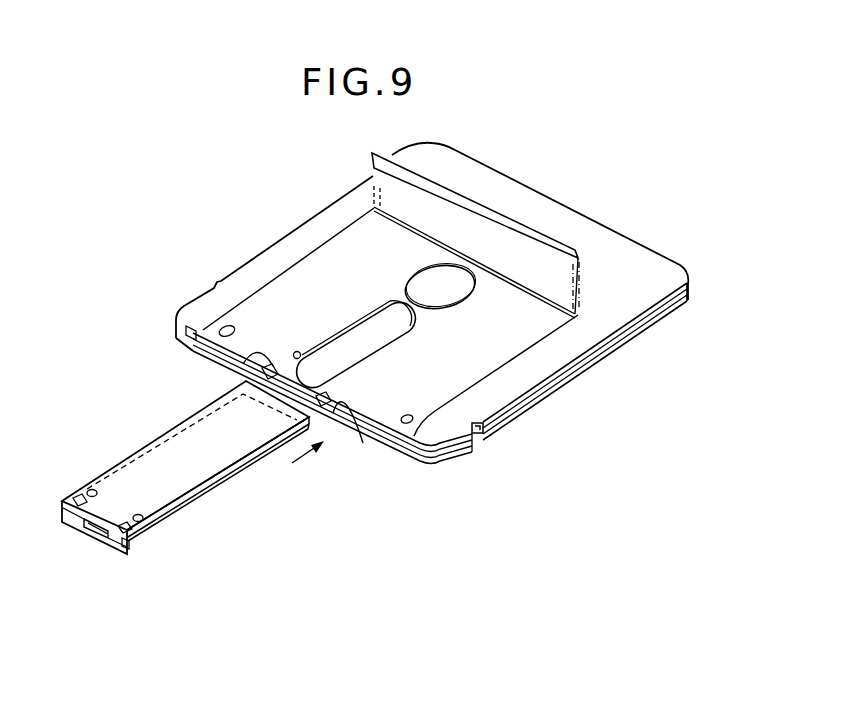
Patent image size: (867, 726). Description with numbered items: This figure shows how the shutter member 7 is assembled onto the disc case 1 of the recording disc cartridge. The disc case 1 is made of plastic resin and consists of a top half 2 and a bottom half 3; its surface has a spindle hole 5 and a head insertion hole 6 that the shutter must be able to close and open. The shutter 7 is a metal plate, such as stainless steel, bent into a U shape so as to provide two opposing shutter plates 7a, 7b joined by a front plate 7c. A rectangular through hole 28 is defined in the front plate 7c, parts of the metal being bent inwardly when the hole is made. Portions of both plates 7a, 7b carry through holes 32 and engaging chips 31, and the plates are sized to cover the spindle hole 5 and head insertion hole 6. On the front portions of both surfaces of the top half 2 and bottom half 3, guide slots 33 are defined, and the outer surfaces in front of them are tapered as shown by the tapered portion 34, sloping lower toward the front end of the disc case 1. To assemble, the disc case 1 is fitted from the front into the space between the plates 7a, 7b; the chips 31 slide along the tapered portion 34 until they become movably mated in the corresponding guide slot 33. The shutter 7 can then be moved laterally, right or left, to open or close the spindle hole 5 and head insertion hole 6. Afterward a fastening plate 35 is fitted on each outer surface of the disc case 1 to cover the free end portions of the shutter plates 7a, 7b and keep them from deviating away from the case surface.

The disc case 1 is at (280, 240).
The top half 2 is at (448, 436).
The bottom half 3 is at (432, 458).
The spindle hole 5 is at (427, 276).
The head insertion hole 6 is at (362, 338).
The shutter member 7 is at (185, 504).
The shutter plate 7a is at (206, 466).
The shutter plate 7b is at (253, 477).
The front plate 7c is at (113, 564).
The through hole 28 is at (93, 540).
The engaging chip 31 is at (141, 545).
The through hole 32 is at (89, 488).
The guide slot 33 is at (334, 412).
The tapered portion 34 is at (222, 364).
The fastening plate 35 is at (526, 229).